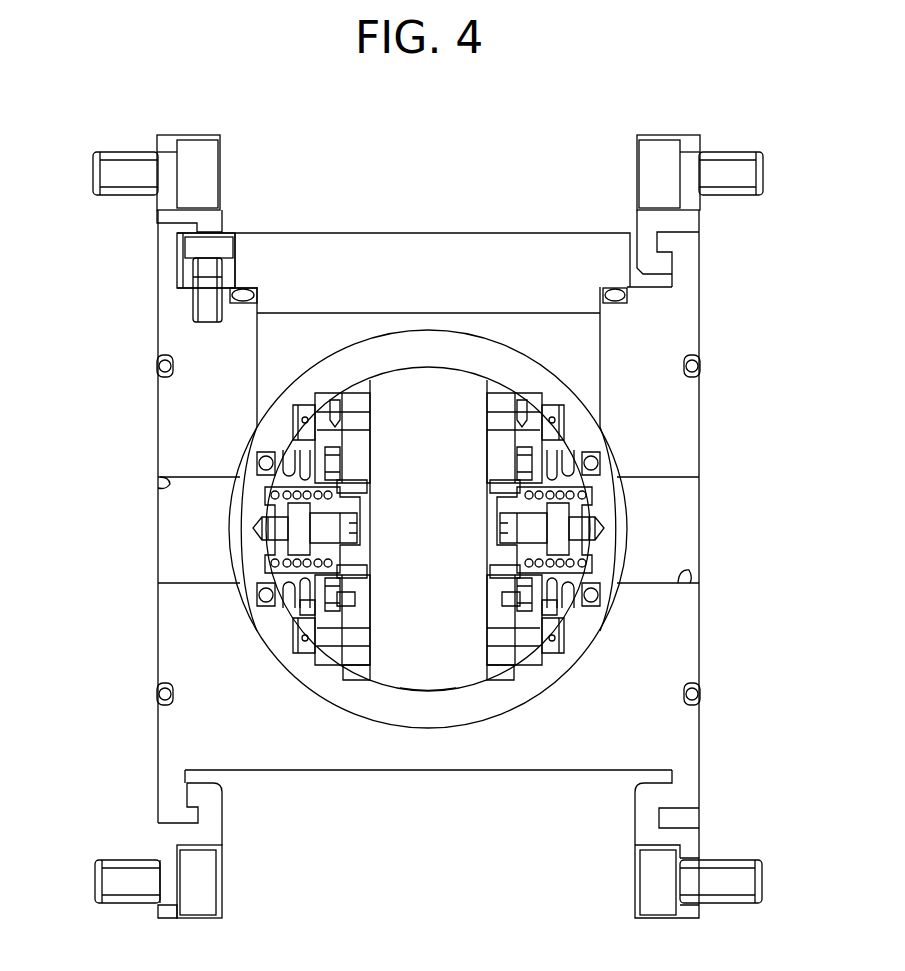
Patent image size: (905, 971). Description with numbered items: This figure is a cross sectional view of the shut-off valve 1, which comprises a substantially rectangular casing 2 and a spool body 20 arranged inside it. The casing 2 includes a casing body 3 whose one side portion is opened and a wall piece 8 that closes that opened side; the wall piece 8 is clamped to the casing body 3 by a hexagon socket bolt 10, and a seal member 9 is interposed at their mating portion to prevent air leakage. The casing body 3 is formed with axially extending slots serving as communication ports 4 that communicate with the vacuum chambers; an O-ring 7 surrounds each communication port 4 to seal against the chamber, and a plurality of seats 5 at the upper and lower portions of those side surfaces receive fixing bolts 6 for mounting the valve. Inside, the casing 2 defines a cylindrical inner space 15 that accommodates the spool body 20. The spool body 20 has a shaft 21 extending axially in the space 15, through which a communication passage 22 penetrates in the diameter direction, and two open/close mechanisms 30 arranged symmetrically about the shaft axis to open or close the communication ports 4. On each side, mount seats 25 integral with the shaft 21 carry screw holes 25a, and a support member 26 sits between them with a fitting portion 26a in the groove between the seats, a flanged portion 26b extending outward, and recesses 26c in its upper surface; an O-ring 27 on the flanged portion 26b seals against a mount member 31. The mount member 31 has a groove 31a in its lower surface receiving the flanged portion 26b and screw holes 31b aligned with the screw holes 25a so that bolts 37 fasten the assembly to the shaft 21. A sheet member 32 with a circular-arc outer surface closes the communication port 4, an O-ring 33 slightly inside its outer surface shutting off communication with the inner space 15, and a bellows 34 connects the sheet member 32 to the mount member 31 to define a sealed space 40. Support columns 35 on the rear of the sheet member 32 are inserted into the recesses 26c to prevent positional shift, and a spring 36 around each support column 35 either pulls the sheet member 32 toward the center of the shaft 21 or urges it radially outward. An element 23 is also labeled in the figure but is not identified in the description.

The shut-off valve 1 is at (427, 96).
The casing 2 is at (482, 200).
The casing body 3 is at (157, 408).
The communication ports 4 is at (160, 485).
The seats 5 is at (180, 135).
The fixing bolts 6 is at (135, 155).
The O-ring 7 is at (157, 362).
The wall piece 8 is at (551, 232).
The seal member 9 is at (613, 290).
The hexagon socket bolt 10 is at (200, 245).
The inner space 15 is at (446, 366).
The spool body 20 is at (390, 358).
The shaft 21 is at (373, 694).
The communication passage 22 is at (445, 645).
The lower guide block 23 is at (355, 665).
The mount seats 25 is at (346, 403).
The screw holes 25a is at (352, 440).
The support member 26 is at (367, 580).
The fitting portion 26a is at (362, 565).
The flanged portion 26b is at (305, 615).
The recesses 26c is at (360, 527).
The O-ring 27 is at (345, 675).
The open/close mechanisms 30 is at (235, 512).
The mount member 31 is at (300, 405).
The groove 31a is at (340, 470).
The screw holes 31b is at (333, 418).
The sheet member 32 is at (255, 553).
The O-ring 33 is at (260, 600).
The bellows 34 is at (257, 430).
The support column 35 is at (258, 565).
The spring 36 is at (350, 488).
The bolts 37 is at (295, 420).
The sealed space 40 is at (265, 617).